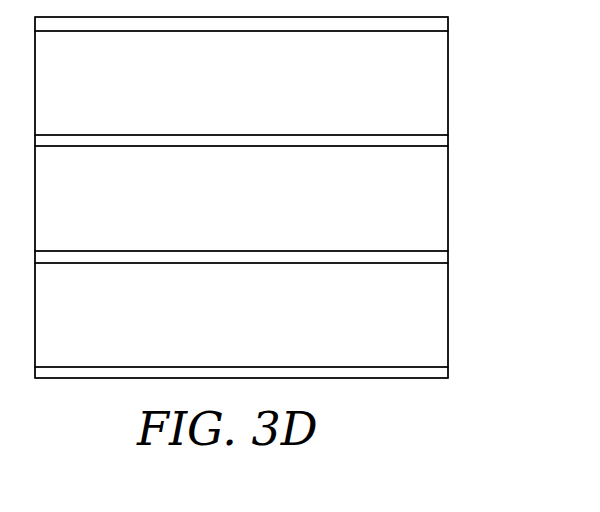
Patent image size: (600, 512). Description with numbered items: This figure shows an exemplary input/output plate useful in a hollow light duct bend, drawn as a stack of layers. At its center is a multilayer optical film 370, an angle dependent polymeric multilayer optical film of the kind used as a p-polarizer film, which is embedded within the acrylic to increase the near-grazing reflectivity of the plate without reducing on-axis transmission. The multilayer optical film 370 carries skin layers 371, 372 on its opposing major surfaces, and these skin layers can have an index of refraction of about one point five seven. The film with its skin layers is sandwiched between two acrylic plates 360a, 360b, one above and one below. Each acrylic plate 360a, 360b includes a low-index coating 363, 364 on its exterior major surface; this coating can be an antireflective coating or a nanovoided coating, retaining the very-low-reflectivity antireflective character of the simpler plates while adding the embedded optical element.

The low-index coating 364 is at (448, 21).
The acrylic plate 360a is at (448, 80).
The skin layer 372 is at (448, 143).
The multilayer optical film 370 is at (448, 195).
The skin layer 371 is at (448, 255).
The acrylic plate 360b is at (448, 313).
The low-index coating 363 is at (448, 373).